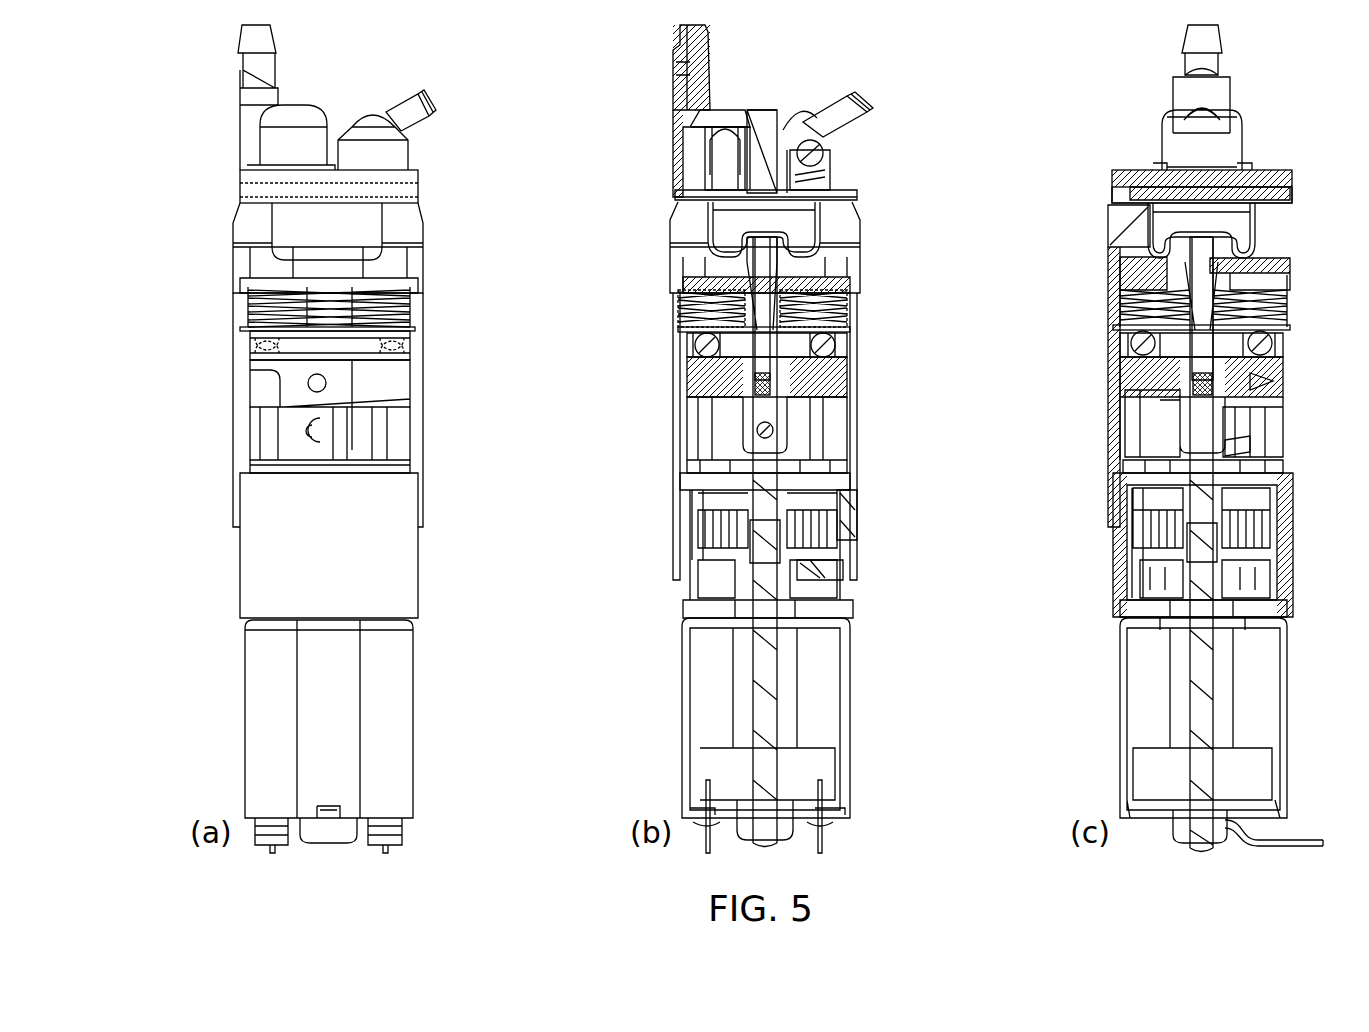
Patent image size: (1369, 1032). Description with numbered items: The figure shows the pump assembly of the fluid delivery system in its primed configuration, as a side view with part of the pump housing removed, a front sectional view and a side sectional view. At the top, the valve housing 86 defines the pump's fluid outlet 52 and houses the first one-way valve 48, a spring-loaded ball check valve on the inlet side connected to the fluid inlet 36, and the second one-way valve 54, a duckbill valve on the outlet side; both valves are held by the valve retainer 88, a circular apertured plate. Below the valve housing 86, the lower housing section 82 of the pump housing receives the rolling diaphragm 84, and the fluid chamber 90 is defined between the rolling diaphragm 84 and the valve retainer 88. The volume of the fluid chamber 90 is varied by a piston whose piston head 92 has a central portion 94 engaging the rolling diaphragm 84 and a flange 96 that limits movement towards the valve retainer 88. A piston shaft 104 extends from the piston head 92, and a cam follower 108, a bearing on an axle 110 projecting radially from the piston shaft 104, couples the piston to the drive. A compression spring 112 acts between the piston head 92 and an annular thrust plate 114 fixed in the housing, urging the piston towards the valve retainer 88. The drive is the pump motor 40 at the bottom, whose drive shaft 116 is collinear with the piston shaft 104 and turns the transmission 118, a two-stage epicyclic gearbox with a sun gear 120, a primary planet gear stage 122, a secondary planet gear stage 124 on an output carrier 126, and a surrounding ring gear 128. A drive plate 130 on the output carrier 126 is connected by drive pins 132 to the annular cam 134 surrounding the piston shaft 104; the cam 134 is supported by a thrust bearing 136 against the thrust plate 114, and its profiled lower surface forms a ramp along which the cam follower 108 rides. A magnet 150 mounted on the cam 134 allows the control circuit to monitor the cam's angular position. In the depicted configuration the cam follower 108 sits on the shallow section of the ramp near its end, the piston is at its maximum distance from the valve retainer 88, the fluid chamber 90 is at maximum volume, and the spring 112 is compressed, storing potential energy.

The fluid inlet 36 is at (411, 100).
The pump motor 40 is at (400, 727).
The first one-way valve 48 is at (823, 160).
The fluid outlet 52 is at (266, 39).
The second one-way valve 54 is at (705, 163).
The lower housing section 82 is at (413, 227).
The rolling diaphragm 84 is at (845, 198).
The valve housing 86 is at (400, 160).
The valve retainer 88 is at (787, 193).
The fluid chamber 90 is at (735, 226).
The piston head 92 is at (378, 263).
The central portion 94 is at (705, 298).
The flange 96 is at (835, 280).
The piston shaft 104 is at (775, 433).
The cam follower 108 is at (313, 420).
The axle 110 is at (758, 428).
The spring 112 is at (407, 307).
The thrust plate 114 is at (243, 329).
The drive shaft 116 is at (752, 670).
The transmission 118 is at (430, 572).
The sun gear 120 is at (710, 617).
The primary planet gear stage 122 is at (845, 576).
The secondary planet gear stage 124 is at (850, 522).
The output carrier 126 is at (707, 500).
The ring gear 128 is at (677, 565).
The drive plate 130 is at (253, 463).
The drive pins 132 is at (380, 430).
The cam 134 is at (407, 383).
The thrust bearing 136 is at (407, 343).
The magnet 150 is at (308, 384).